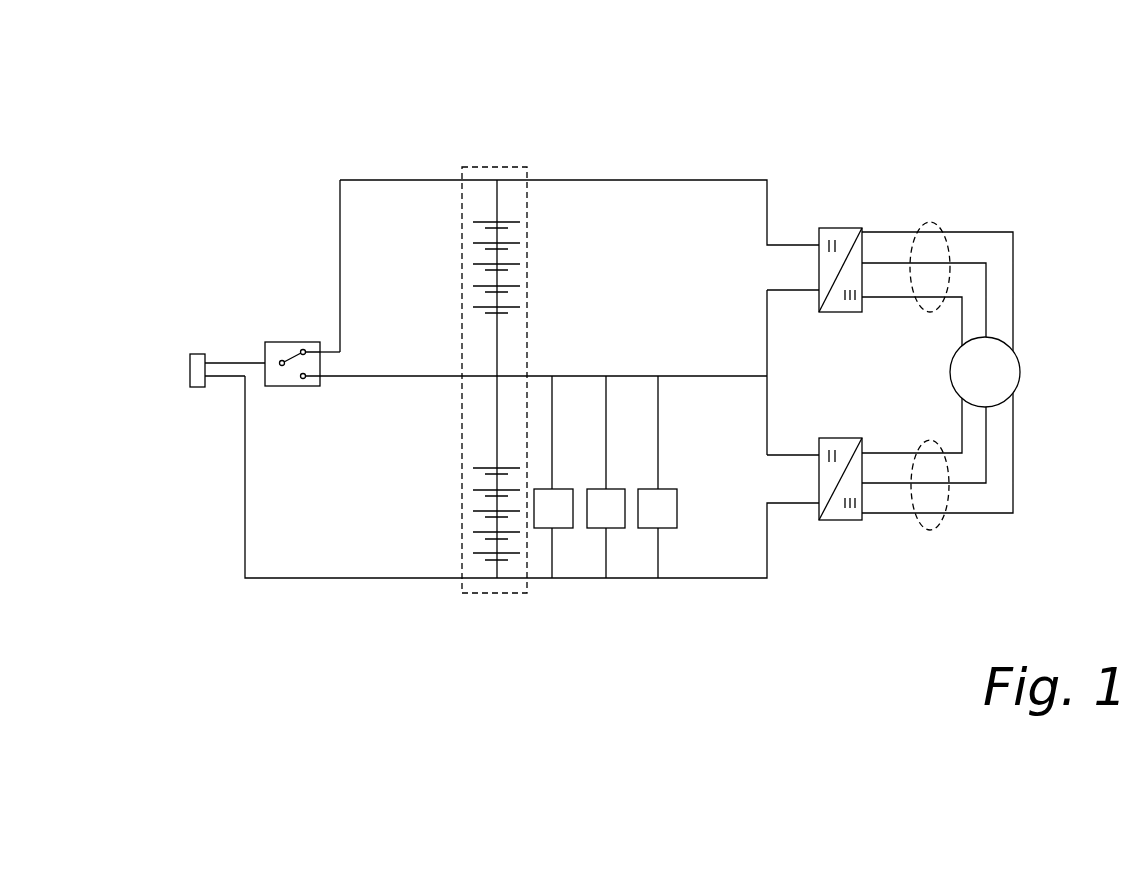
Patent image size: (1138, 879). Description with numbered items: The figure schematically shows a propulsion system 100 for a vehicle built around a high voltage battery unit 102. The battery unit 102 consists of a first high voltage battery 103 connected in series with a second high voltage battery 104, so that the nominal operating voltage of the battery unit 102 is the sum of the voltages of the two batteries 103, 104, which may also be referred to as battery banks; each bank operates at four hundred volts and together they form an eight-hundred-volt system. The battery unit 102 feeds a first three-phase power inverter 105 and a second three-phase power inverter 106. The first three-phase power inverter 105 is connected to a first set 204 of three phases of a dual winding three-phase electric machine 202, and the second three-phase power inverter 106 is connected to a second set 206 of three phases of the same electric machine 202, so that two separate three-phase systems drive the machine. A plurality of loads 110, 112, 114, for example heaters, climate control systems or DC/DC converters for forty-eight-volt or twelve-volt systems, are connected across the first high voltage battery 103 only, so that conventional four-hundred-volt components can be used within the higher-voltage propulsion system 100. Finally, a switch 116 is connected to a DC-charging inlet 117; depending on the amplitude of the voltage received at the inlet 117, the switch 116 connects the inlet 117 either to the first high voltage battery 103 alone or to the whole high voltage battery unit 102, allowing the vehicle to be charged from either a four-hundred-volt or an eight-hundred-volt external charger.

The propulsion system 100 is at (902, 100).
The high voltage battery unit 102 is at (508, 167).
The first high voltage battery 103 is at (495, 514).
The second high voltage battery 104 is at (500, 270).
The first three-phase power inverter 105 is at (838, 227).
The second three-phase power inverter 106 is at (826, 522).
The load 110 is at (560, 488).
The load 112 is at (617, 488).
The load 114 is at (672, 488).
The switch 116 is at (285, 342).
The DC-charging inlet 117 is at (190, 366).
The dual winding three-phase electric machine 202 is at (1020, 370).
The first set of three phases 204 is at (933, 222).
The second set of three phases 206 is at (935, 530).